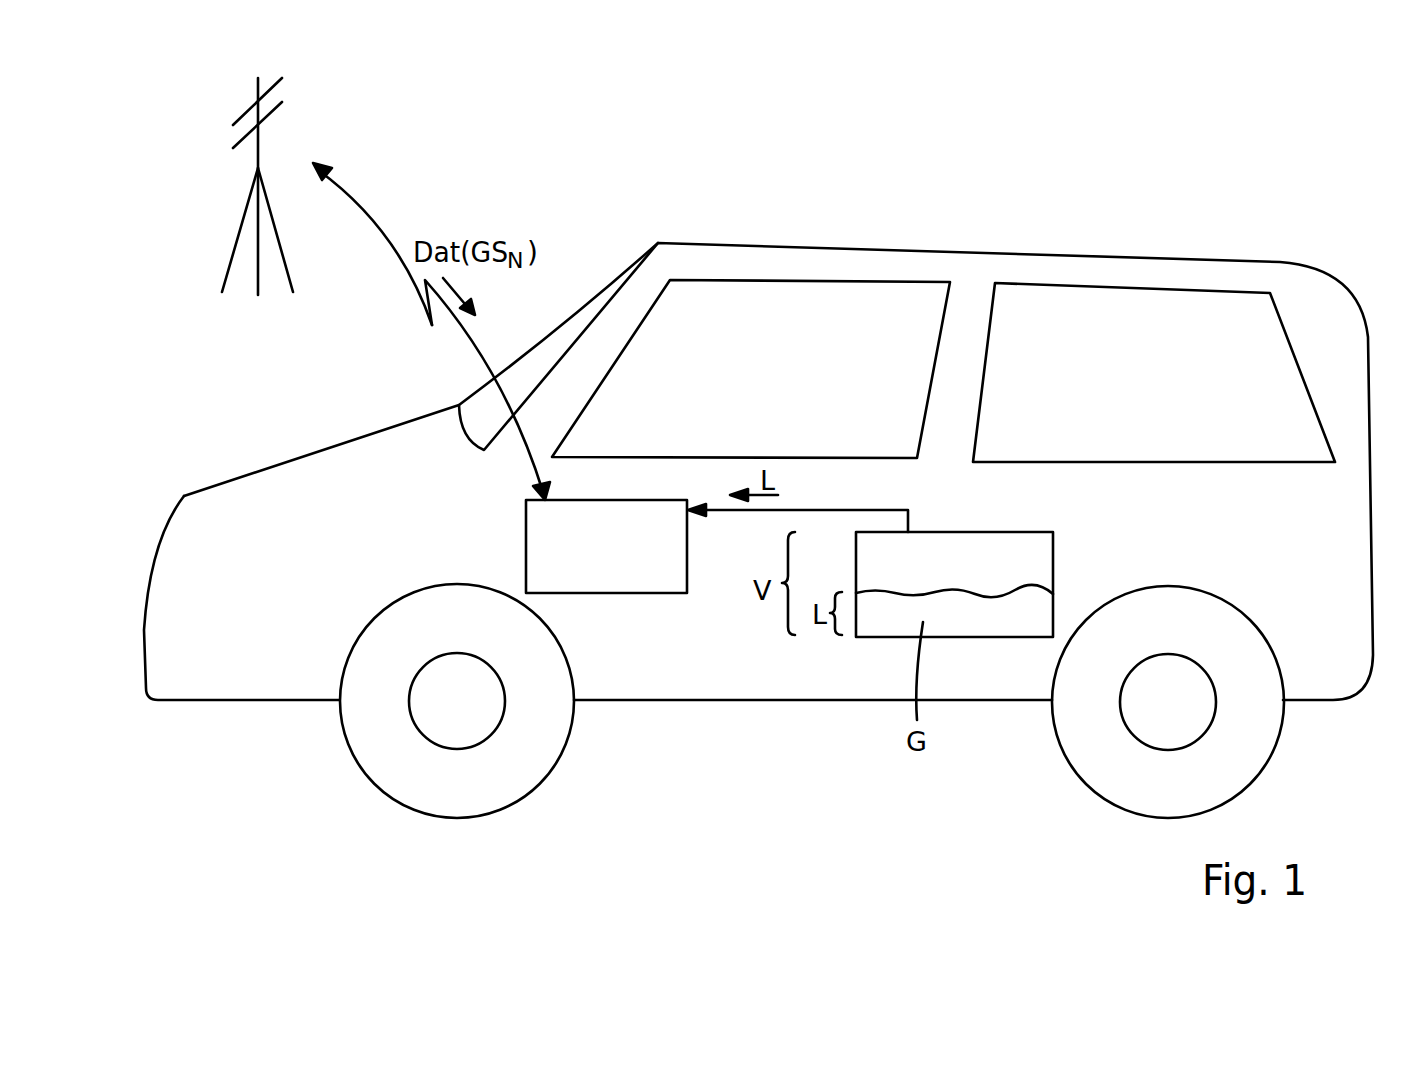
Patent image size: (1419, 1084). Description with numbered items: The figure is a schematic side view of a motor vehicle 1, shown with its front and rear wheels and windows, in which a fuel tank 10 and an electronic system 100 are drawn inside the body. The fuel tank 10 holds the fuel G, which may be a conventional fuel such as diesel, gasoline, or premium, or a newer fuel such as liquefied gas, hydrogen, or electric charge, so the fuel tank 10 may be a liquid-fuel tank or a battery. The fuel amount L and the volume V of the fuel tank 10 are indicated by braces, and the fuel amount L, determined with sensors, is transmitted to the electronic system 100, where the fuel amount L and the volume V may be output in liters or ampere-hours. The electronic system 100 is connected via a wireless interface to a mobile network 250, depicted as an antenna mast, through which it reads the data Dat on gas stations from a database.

The motor vehicle 1 is at (1168, 260).
The fuel tank 10 is at (1018, 530).
The electronic system 100 is at (629, 559).
The mobile network 250 is at (258, 155).